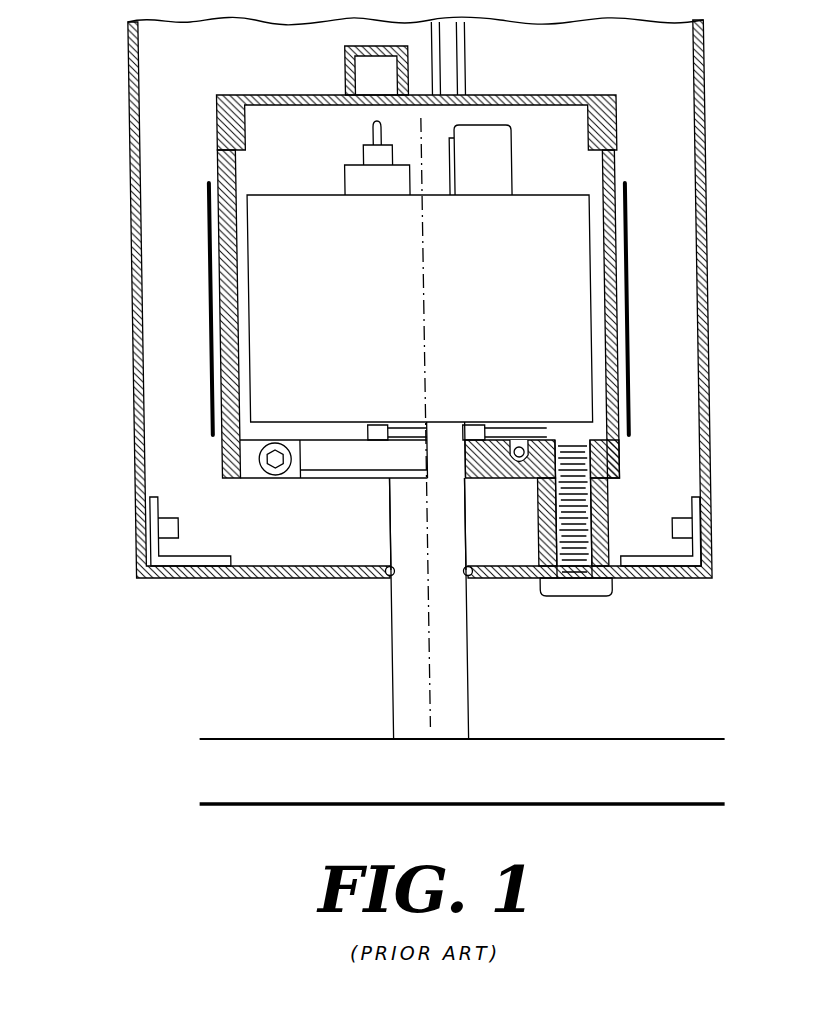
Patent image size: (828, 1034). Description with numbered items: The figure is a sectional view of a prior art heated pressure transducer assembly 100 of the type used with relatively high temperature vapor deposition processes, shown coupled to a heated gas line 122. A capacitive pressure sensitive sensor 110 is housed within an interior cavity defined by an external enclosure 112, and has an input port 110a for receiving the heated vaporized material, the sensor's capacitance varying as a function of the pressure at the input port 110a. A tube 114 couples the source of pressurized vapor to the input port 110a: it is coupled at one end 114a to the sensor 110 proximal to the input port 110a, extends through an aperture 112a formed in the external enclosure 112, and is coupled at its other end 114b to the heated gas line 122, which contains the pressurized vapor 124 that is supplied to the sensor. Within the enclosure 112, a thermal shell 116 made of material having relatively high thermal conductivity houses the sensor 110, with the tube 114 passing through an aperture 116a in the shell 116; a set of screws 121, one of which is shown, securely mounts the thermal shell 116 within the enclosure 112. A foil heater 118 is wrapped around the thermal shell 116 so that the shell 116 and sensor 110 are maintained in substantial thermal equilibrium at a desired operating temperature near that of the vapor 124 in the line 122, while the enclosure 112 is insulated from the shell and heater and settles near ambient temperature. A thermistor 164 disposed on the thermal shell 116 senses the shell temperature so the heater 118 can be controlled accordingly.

The heated pressure transducer assembly 100 is at (118, 542).
The pressure sensitive sensor 110 is at (524, 284).
The input port 110a is at (440, 445).
The external enclosure 112 is at (703, 93).
The aperture 112a is at (405, 568).
The tube 114 is at (382, 652).
The end 114a is at (361, 428).
The other end 114b is at (458, 728).
The thermal shell 116 is at (613, 158).
The aperture 116a is at (452, 440).
The foil heater 118 is at (625, 250).
The screws 121 is at (603, 590).
The heated gas line 122 is at (618, 806).
The pressurized vapor 124 is at (581, 784).
The thermistor 164 is at (525, 437).